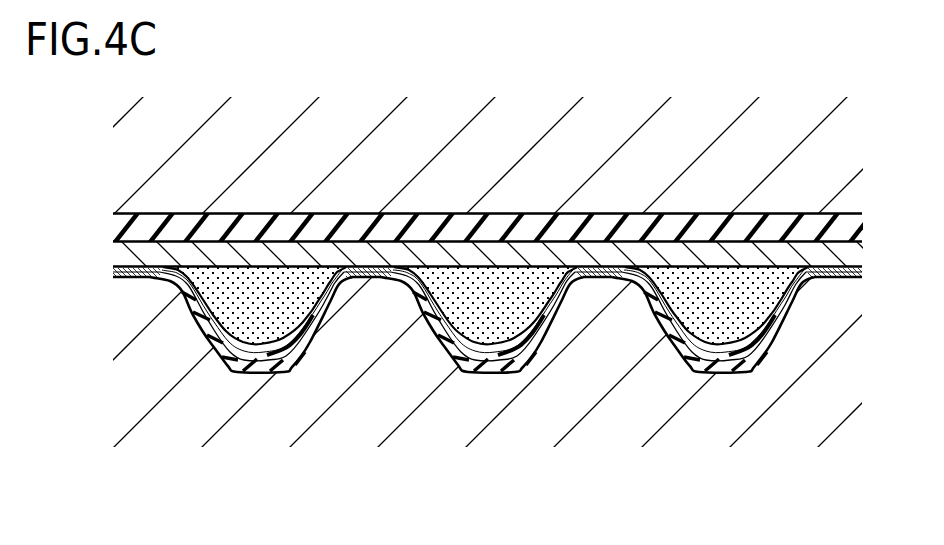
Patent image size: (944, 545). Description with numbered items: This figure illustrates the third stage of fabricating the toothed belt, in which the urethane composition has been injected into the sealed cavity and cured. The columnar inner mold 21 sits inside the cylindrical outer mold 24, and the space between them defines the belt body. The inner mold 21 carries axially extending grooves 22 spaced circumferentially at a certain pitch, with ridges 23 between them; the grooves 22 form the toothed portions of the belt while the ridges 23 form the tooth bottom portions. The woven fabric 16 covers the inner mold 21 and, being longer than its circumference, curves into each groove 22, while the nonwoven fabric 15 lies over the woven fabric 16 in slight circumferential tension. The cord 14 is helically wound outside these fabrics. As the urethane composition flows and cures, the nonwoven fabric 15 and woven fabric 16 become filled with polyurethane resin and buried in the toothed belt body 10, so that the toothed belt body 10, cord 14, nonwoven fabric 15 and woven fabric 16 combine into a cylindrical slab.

The toothed belt body 10 is at (263, 226).
The cord 14 is at (714, 257).
The nonwoven fabric 15 is at (719, 322).
The woven fabric 16 is at (242, 360).
The inner mold 21 is at (547, 430).
The grooves 22 is at (299, 361).
The ridges 23 is at (374, 292).
The outer mold 24 is at (515, 150).